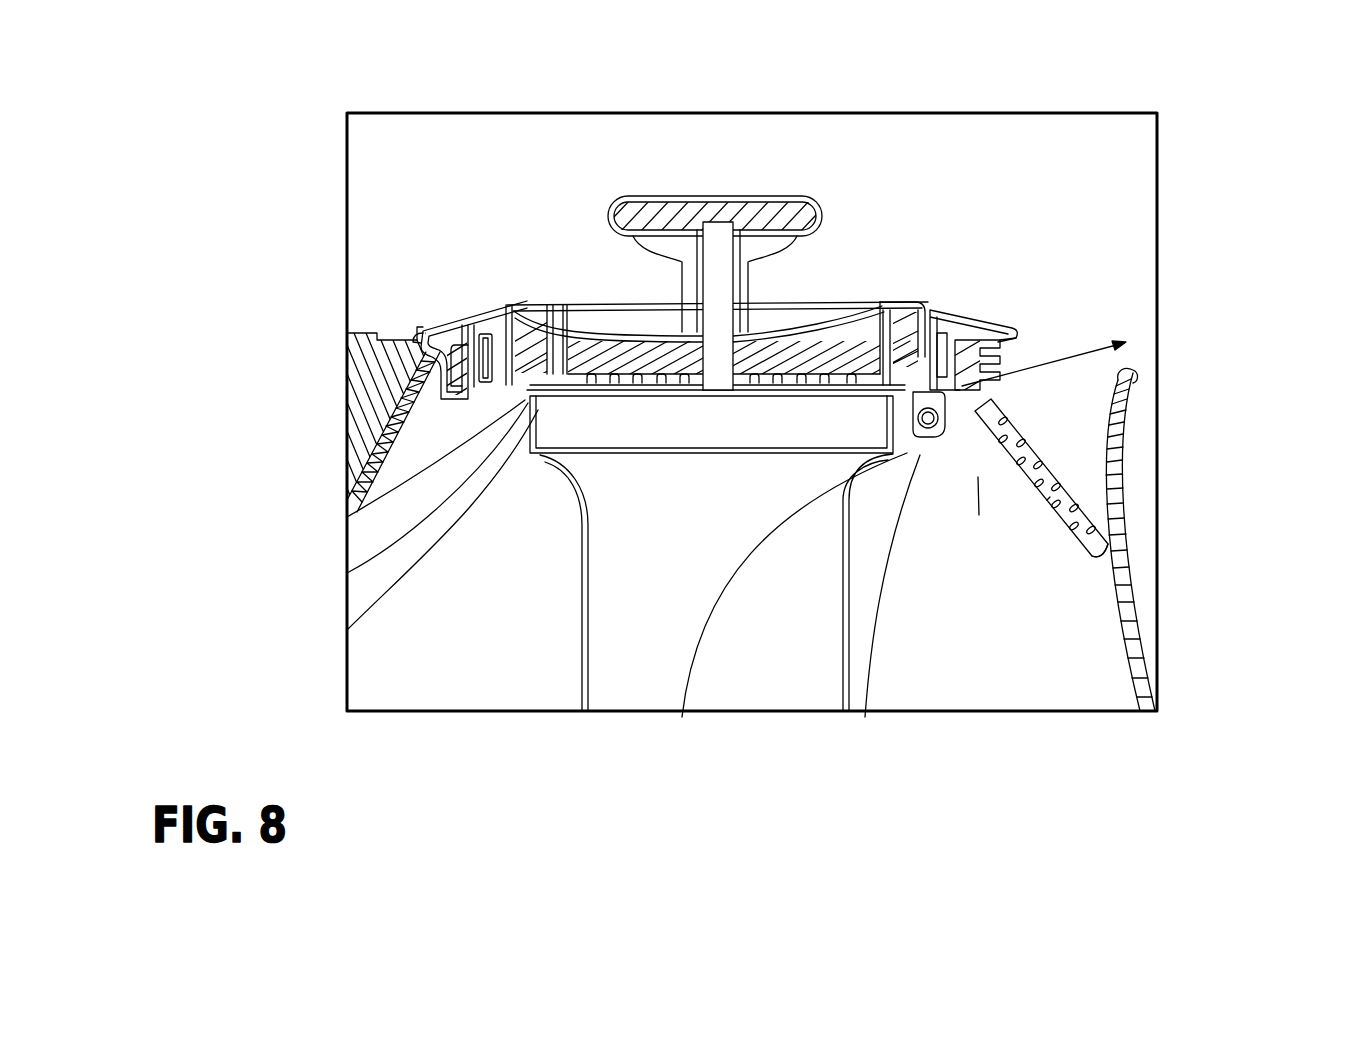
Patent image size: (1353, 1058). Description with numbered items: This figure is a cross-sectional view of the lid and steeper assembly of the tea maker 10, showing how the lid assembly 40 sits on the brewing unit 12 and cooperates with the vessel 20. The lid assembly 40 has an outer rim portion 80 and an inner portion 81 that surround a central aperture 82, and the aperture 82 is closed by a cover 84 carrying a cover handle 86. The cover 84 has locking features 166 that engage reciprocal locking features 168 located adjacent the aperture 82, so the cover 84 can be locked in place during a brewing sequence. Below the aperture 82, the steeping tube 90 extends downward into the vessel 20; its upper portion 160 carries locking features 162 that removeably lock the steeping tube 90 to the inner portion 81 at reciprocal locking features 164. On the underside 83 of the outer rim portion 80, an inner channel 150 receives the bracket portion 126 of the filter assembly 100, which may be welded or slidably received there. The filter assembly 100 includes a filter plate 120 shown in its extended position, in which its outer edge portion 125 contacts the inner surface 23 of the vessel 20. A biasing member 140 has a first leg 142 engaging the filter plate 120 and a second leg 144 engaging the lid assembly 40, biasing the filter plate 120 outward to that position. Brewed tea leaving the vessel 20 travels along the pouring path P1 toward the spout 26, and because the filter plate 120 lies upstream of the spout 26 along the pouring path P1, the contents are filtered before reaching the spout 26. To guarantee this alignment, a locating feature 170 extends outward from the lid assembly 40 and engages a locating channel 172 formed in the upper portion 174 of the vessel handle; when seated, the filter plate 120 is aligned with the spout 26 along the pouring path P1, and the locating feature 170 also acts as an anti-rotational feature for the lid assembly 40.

The tea maker 10 is at (460, 146).
The brewing unit 12 is at (1183, 565).
The vessel 20 is at (1143, 637).
The inner surface 23 is at (1120, 623).
The spout 26 is at (1120, 447).
The lid assembly 40 is at (848, 192).
The outer rim portion 80 is at (957, 305).
The inner portion 81 is at (347, 517).
The aperture 82 is at (493, 310).
The underside 83 is at (842, 347).
The cover 84 is at (567, 300).
The cover handle 86 is at (672, 198).
The steeping tube 90 is at (578, 654).
The filter assembly 100 is at (1055, 443).
The filter plate 120 is at (1047, 500).
The outer edge portion 125 is at (1095, 556).
The bracket portion 126 is at (990, 345).
The biasing member 140 is at (926, 442).
The first leg 142 is at (682, 717).
The second leg 144 is at (865, 717).
The inner channel 150 is at (960, 362).
The upper portion 160 is at (580, 499).
The locking features 162 is at (347, 630).
The reciprocal locking features 164 is at (347, 573).
The locking features 166 is at (522, 398).
The reciprocal locking features 168 is at (447, 320).
The locating feature 170 is at (436, 349).
The locating channel 172 is at (425, 345).
The upper portion 174 is at (352, 420).
The pouring path P1 is at (978, 475).